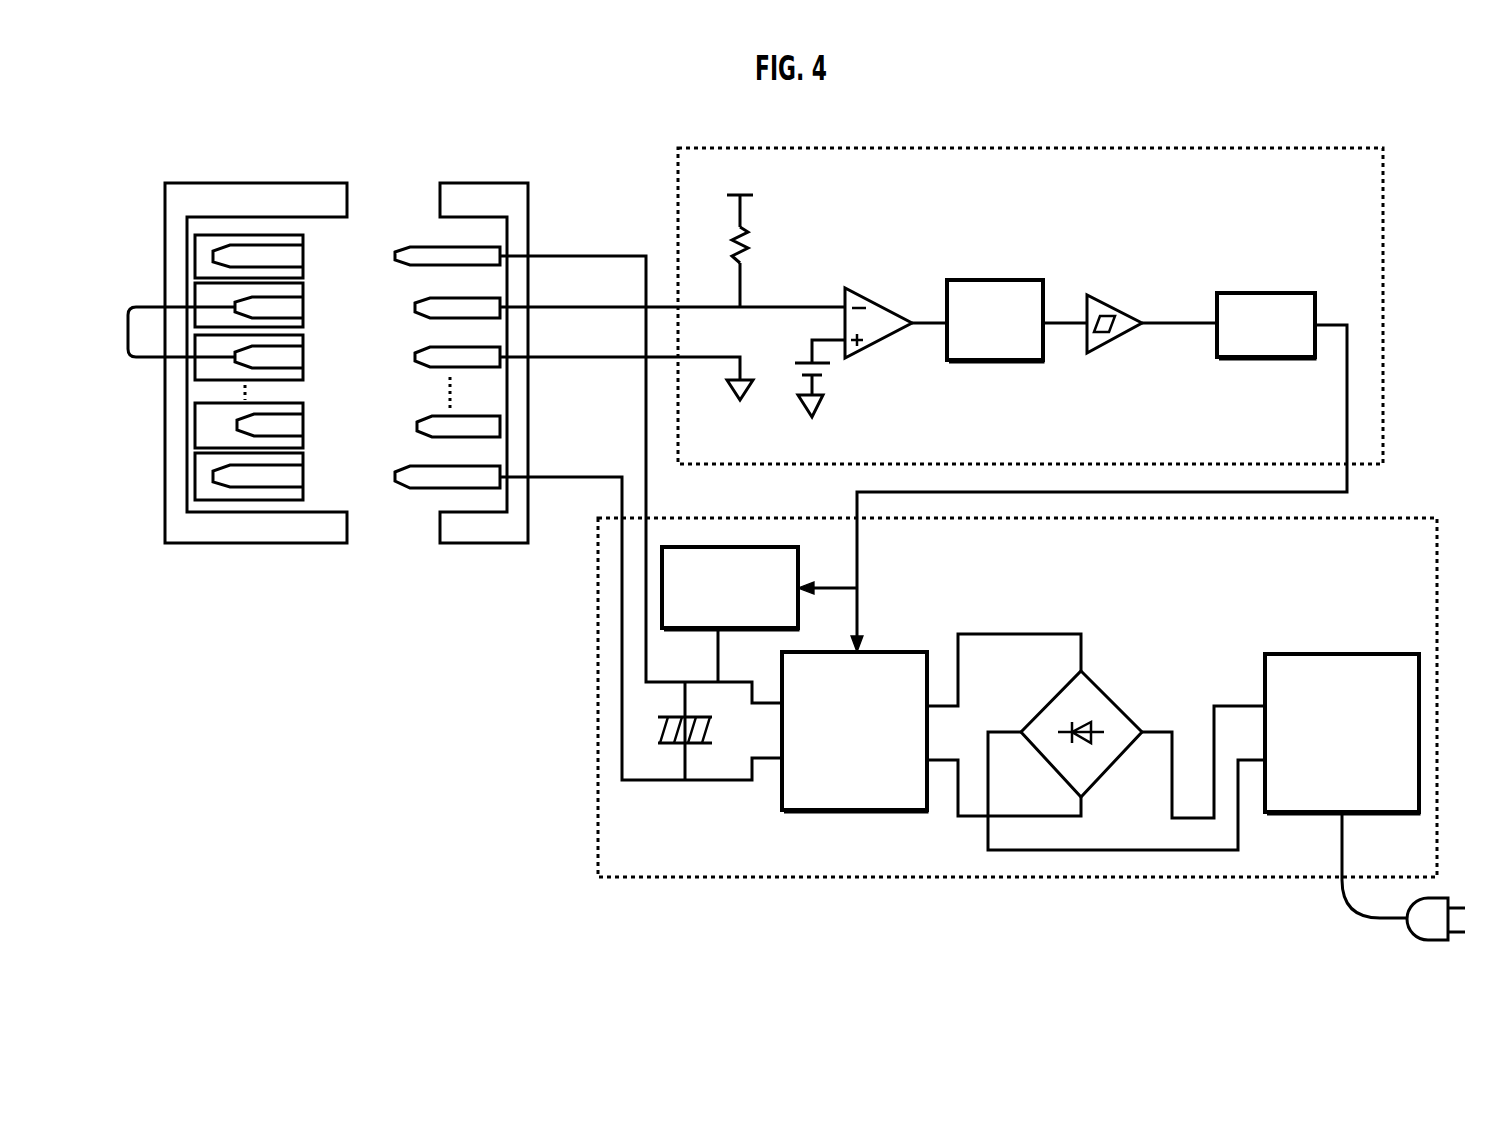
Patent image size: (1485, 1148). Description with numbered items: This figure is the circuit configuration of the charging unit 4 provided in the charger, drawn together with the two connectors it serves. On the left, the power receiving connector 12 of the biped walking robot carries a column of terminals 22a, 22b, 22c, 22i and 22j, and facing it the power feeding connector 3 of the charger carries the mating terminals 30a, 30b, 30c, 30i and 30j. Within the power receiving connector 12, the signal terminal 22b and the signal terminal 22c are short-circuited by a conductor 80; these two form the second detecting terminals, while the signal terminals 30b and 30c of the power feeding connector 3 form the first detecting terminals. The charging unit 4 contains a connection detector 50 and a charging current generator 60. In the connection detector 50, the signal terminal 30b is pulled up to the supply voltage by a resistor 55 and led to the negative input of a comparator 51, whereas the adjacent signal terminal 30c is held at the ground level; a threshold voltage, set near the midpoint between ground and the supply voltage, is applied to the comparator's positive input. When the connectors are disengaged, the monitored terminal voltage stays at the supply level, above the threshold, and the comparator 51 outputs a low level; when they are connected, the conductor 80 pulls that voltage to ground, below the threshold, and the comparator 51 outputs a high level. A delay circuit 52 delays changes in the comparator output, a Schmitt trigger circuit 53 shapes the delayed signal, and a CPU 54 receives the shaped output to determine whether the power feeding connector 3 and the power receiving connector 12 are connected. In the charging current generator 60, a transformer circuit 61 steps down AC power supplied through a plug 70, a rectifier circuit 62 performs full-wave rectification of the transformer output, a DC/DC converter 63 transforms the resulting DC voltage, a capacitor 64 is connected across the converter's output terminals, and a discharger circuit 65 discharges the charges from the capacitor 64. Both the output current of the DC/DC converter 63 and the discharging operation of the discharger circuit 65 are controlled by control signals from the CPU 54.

The charging unit 4 is at (1087, 135).
The power receiving connector 12 is at (262, 183).
The power feeding connector 3 is at (478, 183).
The conductor 80 is at (128, 330).
The contact terminal 22a is at (282, 266).
The signal terminal 22b is at (282, 317).
The signal terminal 22c is at (282, 367).
The contact terminal 22i is at (282, 435).
The contact terminal 22j is at (282, 486).
The connector pin 30a is at (397, 255).
The signal terminal 30b is at (417, 307).
The signal terminal 30c is at (417, 357).
The connector pin 30i is at (419, 426).
The connector pin 30j is at (397, 476).
The connection detector 50 is at (1273, 148).
The resistor 55 is at (750, 237).
The comparator 51 is at (866, 294).
The delay circuit 52 is at (1018, 280).
The Schmitt trigger circuit 53 is at (1095, 298).
The CPU 54 is at (1282, 293).
The charging current generator 60 is at (1362, 518).
The discharger circuit 65 is at (778, 547).
The capacitor 64 is at (706, 716).
The DC/DC converter 63 is at (880, 652).
The rectifier circuit 62 is at (1104, 692).
The transformer circuit 61 is at (1355, 654).
The plug 70 is at (1437, 898).